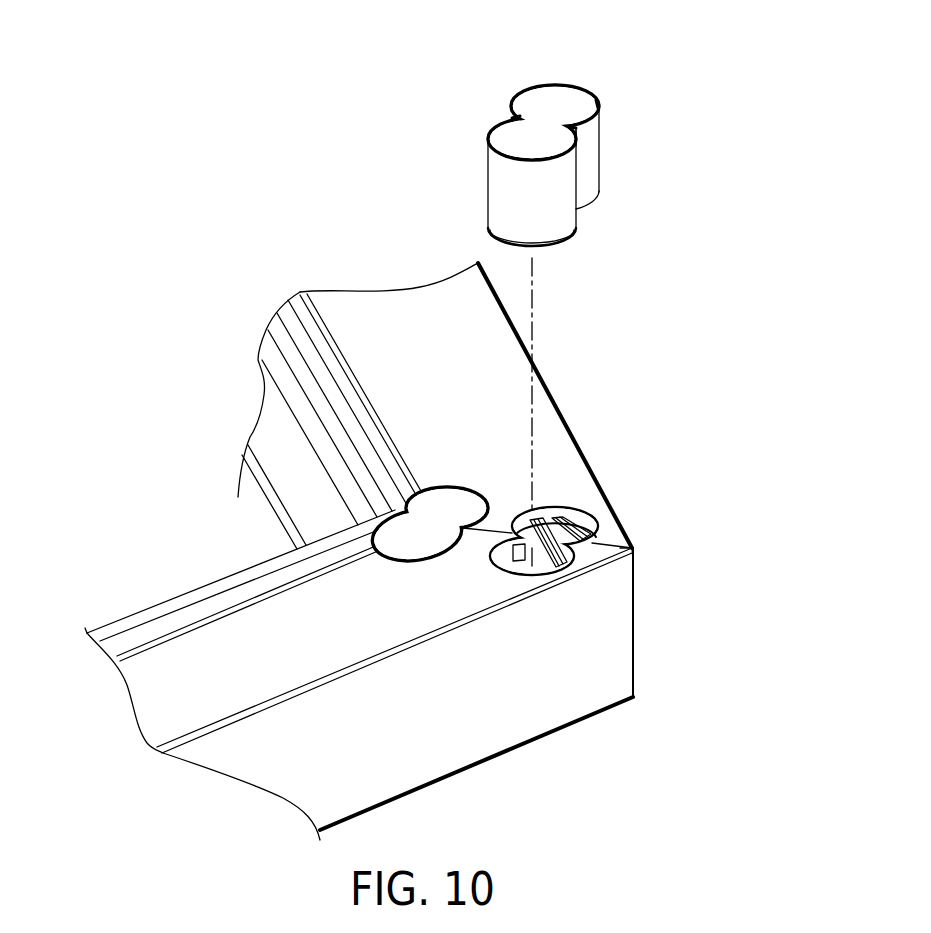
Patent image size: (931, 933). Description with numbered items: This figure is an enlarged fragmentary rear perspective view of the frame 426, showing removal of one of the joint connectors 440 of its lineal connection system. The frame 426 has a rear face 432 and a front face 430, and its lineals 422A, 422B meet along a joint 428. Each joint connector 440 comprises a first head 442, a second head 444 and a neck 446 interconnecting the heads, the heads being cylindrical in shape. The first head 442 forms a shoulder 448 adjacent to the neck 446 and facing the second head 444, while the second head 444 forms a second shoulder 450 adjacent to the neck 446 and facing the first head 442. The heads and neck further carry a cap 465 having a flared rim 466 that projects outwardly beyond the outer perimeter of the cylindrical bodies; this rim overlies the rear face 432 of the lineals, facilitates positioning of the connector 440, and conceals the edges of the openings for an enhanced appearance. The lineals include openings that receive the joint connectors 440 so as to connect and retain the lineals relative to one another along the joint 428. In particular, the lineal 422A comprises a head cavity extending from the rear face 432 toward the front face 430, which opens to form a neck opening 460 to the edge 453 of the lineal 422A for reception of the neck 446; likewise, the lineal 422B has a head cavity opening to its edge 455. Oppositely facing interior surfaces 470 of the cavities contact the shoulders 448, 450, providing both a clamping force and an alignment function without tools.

The frame 426 is at (704, 113).
The joint connector 440 is at (394, 561).
The cap 465 is at (553, 90).
The second shoulder 450 is at (510, 115).
The flared rim 466 is at (600, 107).
The neck 446 is at (580, 127).
The shoulder 448 is at (578, 130).
The first head 442 is at (507, 198).
The second head 444 is at (590, 182).
The rear face 432 is at (397, 307).
The lineal 422B is at (512, 325).
The interior surfaces 470 is at (527, 520).
The neck opening 460 is at (596, 567).
The edge 453 is at (593, 550).
The edge 455 is at (627, 550).
The joint 428 is at (610, 557).
The lineal 422A is at (400, 681).
The front face 430 is at (477, 767).